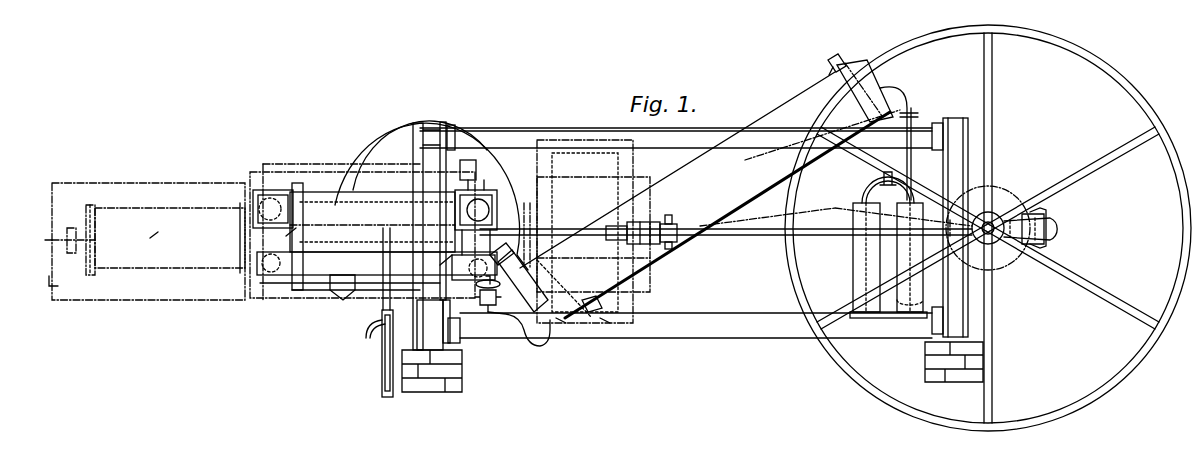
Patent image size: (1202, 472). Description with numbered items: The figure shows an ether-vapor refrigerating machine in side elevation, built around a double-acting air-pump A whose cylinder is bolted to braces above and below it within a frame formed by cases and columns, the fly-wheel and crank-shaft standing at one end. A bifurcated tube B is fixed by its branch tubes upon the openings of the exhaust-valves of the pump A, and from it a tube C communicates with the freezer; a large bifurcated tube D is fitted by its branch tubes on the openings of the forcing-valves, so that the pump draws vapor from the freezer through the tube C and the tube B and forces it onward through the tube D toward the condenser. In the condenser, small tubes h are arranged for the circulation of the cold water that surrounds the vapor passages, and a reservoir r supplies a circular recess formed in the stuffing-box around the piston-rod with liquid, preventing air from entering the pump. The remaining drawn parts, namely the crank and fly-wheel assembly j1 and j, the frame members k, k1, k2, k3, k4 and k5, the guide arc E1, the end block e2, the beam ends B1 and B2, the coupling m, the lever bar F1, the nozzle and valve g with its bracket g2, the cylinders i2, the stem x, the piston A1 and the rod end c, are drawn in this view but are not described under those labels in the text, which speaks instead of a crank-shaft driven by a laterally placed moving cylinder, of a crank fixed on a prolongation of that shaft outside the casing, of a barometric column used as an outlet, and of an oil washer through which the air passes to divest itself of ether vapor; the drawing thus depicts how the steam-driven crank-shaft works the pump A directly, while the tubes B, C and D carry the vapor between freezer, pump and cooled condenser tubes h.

The fly wheel j1 is at (988, 228).
The shaft j is at (878, 228).
The bearing pedestal k is at (954, 250).
The frame rails k1 is at (591, 235).
The upright plate k2 is at (434, 236).
The pillar k3 is at (432, 346).
The guide arc E1 is at (431, 195).
The double-acting air-pump A is at (372, 222).
The end block e2 is at (278, 236).
The bifurcated tube B is at (377, 271).
The beam end B1 is at (287, 239).
The bearing block B2 is at (467, 259).
The tube communicating with the freezer C is at (342, 287).
The large bifurcated tube D is at (276, 186).
The reservoir r is at (468, 170).
The shaft coupling m is at (726, 201).
The small tubes h is at (587, 231).
The connecting rod k4 is at (683, 169).
The lever bar F1 is at (727, 215).
The nozzle and valve g is at (512, 294).
The bracket g2 is at (831, 130).
The cylinders i2 is at (888, 238).
The stem x is at (379, 312).
The piston assembly k5 is at (130, 236).
The piston A1 is at (155, 232).
The rod end c is at (46, 240).